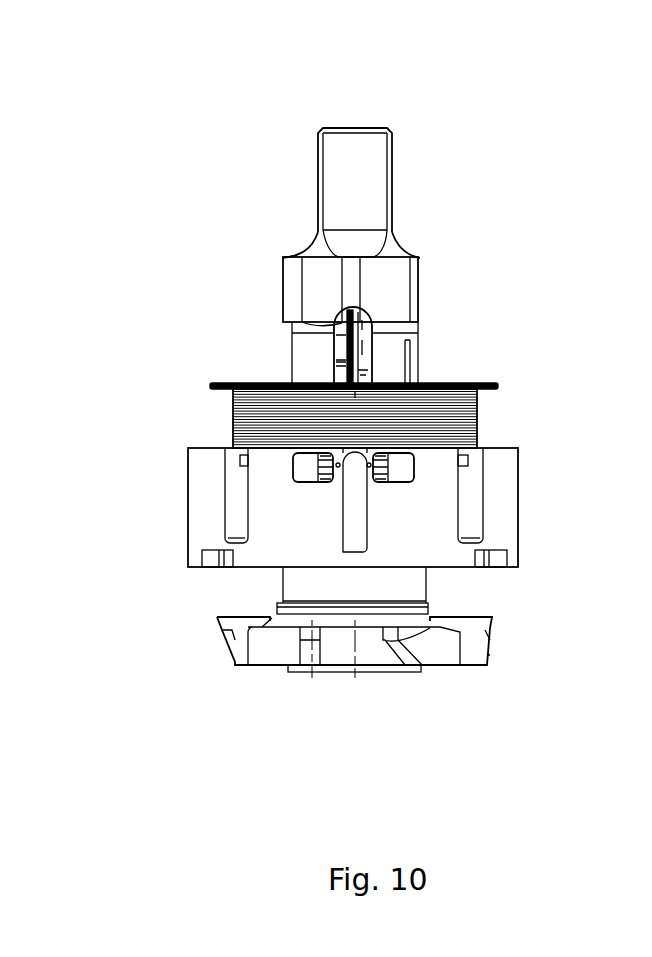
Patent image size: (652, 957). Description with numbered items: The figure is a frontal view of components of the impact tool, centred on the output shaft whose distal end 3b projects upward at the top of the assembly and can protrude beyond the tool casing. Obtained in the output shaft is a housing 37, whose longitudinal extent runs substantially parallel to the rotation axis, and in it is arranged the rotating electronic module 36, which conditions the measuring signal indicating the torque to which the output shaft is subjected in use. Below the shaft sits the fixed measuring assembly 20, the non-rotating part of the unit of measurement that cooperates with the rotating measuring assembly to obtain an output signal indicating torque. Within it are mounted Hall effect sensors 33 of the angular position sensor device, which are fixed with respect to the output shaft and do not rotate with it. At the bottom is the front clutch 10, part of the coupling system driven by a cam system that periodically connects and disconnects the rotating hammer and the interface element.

The distal end 3b is at (325, 100).
The rotating electronic module 36 is at (358, 352).
The housing 37 is at (337, 352).
The fixed measuring assembly 20 is at (225, 362).
The Hall effect sensor 33 is at (293, 458).
The front clutch 10 is at (371, 672).